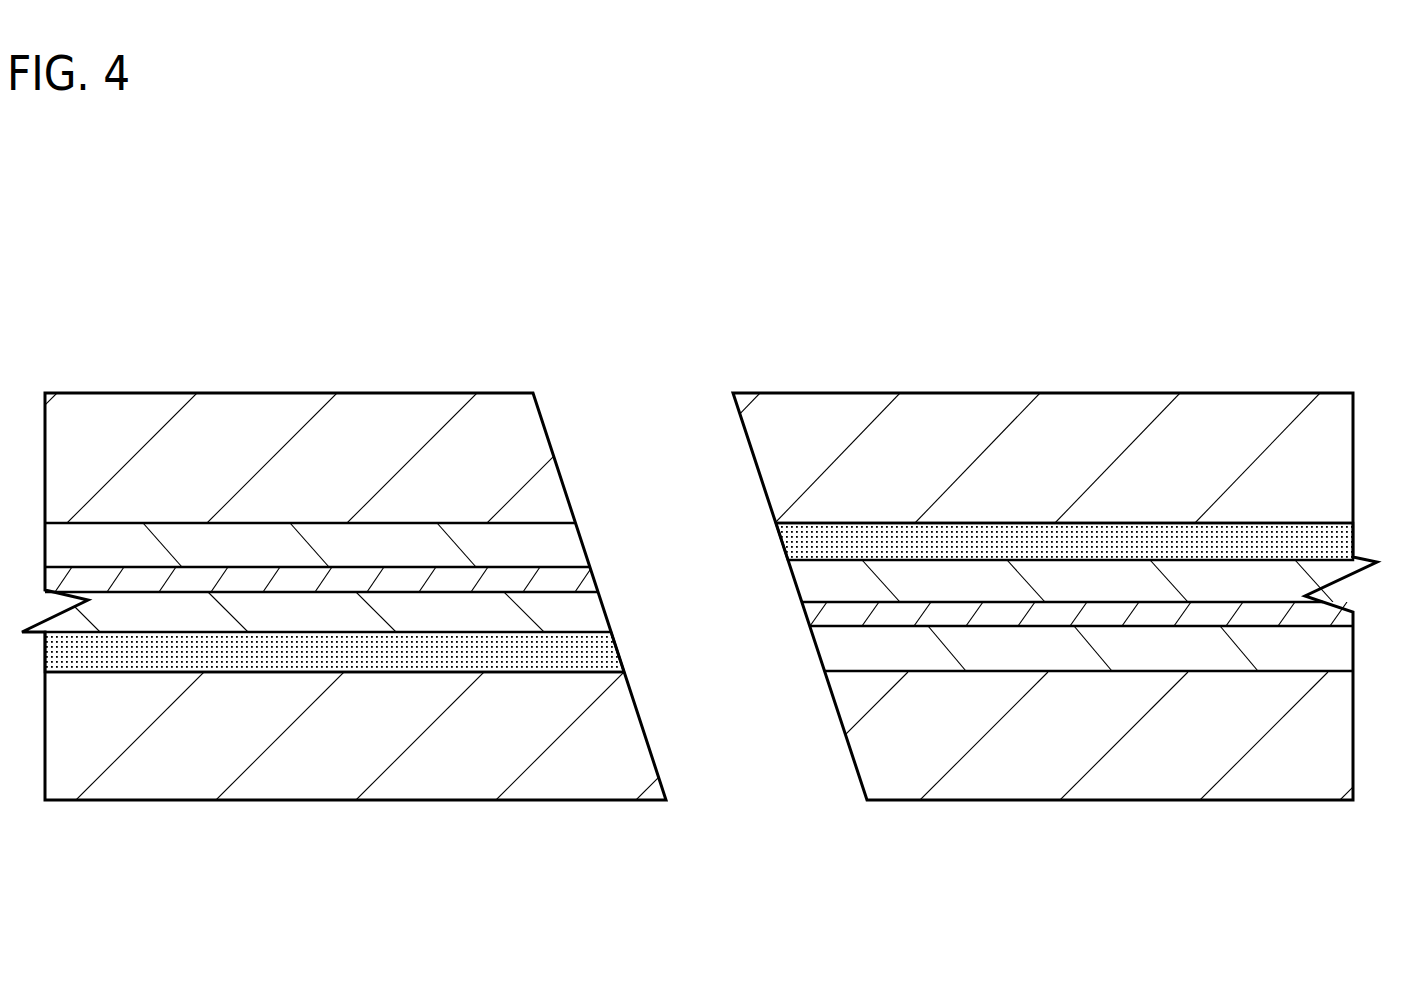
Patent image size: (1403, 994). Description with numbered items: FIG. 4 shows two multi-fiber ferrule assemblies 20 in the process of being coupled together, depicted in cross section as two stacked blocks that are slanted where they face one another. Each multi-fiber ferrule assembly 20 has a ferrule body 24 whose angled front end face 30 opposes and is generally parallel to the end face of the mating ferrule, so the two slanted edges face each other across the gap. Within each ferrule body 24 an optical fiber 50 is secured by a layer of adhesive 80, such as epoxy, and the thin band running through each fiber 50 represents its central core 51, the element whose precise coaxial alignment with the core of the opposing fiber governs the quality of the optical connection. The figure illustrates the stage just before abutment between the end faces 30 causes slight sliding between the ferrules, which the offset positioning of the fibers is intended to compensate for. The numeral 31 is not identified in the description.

The multi-fiber ferrule assembly 20 is at (272, 392).
The ferrule body 24 is at (381, 394).
The optical fiber 50 is at (478, 522).
The central core 51 is at (505, 586).
The adhesive 80 is at (358, 655).
The front end face 30 is at (660, 765).
The second substrate 31 is at (848, 755).